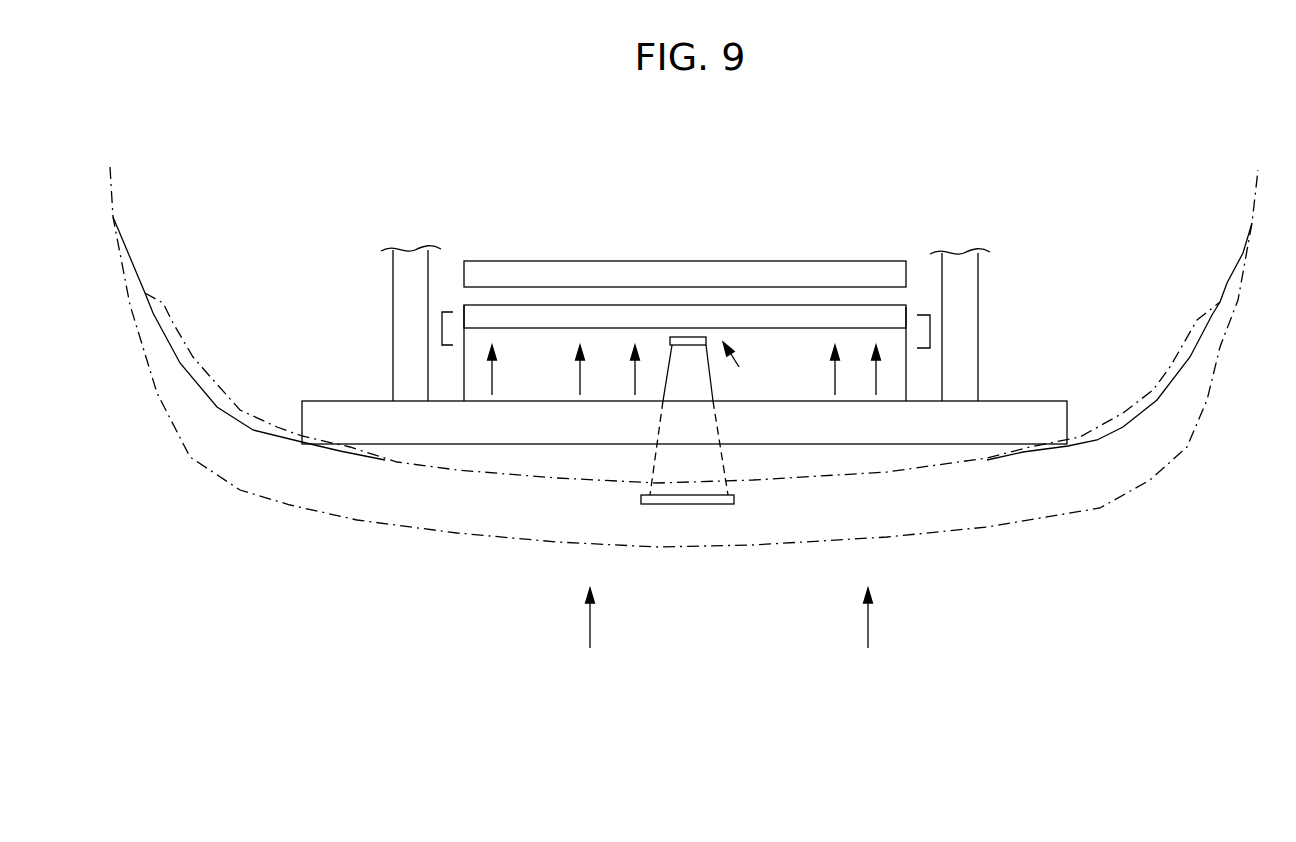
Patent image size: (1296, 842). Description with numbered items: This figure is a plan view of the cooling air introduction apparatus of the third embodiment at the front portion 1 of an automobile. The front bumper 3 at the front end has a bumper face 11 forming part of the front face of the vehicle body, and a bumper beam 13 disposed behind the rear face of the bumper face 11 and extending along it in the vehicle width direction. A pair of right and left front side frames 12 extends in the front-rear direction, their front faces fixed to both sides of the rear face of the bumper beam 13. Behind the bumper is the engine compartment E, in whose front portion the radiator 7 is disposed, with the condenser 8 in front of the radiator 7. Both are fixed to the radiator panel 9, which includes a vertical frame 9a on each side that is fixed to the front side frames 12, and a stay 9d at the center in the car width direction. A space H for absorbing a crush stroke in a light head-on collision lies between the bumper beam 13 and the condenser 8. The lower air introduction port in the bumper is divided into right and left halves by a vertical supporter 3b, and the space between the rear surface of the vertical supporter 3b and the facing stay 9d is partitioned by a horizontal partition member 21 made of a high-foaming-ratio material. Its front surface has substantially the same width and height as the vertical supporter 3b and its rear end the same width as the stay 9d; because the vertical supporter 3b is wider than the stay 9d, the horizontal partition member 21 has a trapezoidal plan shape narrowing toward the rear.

The front portion 1 is at (1210, 530).
The front bumper 3 is at (1093, 540).
The vertical supporter 3b is at (692, 505).
The radiator 7 is at (793, 276).
The condenser 8 is at (540, 305).
The radiator panel 9 is at (935, 297).
The vertical frame 9a is at (438, 324).
The stay 9d is at (692, 337).
The bumper face 11 is at (990, 527).
The front side frame 12 is at (405, 282).
The bumper beam 13 is at (475, 422).
The horizontal partition member 21 is at (713, 382).
The space H is at (925, 381).
The engine compartment E is at (631, 155).